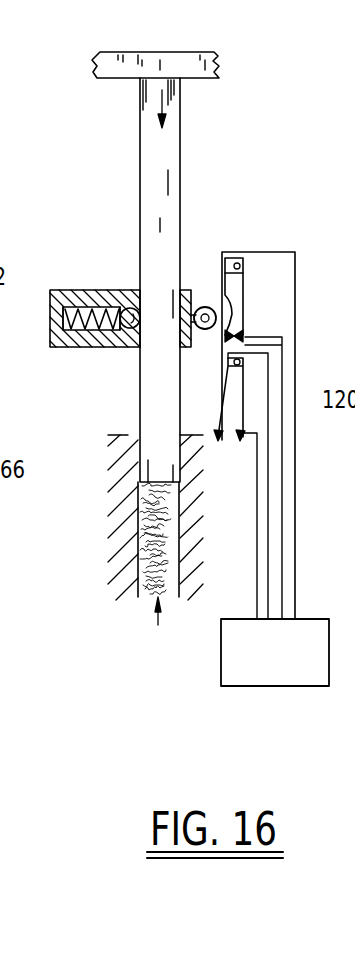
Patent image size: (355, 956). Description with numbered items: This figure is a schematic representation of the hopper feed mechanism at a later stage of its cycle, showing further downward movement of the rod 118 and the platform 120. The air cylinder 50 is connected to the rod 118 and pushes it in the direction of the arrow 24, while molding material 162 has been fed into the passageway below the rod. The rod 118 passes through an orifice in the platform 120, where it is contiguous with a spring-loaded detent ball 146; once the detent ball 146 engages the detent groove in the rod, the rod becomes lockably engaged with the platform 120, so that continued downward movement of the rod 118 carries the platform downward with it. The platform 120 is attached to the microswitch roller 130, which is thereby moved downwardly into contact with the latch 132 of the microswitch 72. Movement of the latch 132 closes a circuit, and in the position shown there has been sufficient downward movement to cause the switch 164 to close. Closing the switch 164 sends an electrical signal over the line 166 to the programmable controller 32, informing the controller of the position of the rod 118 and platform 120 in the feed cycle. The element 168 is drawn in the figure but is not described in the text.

The air cylinder 50 is at (220, 62).
The arrow 24 is at (165, 104).
The rod 118 is at (181, 152).
The platform 120 is at (50, 318).
The detent ball 146 is at (130, 290).
The microswitch roller 130 is at (203, 306).
The microswitch 72 is at (270, 304).
The latch 132 is at (245, 314).
The switch 164 is at (283, 343).
The pivot lever 168 is at (232, 440).
The line 166 is at (283, 471).
The molding material 162 is at (138, 548).
The programmable controller 32 is at (265, 670).